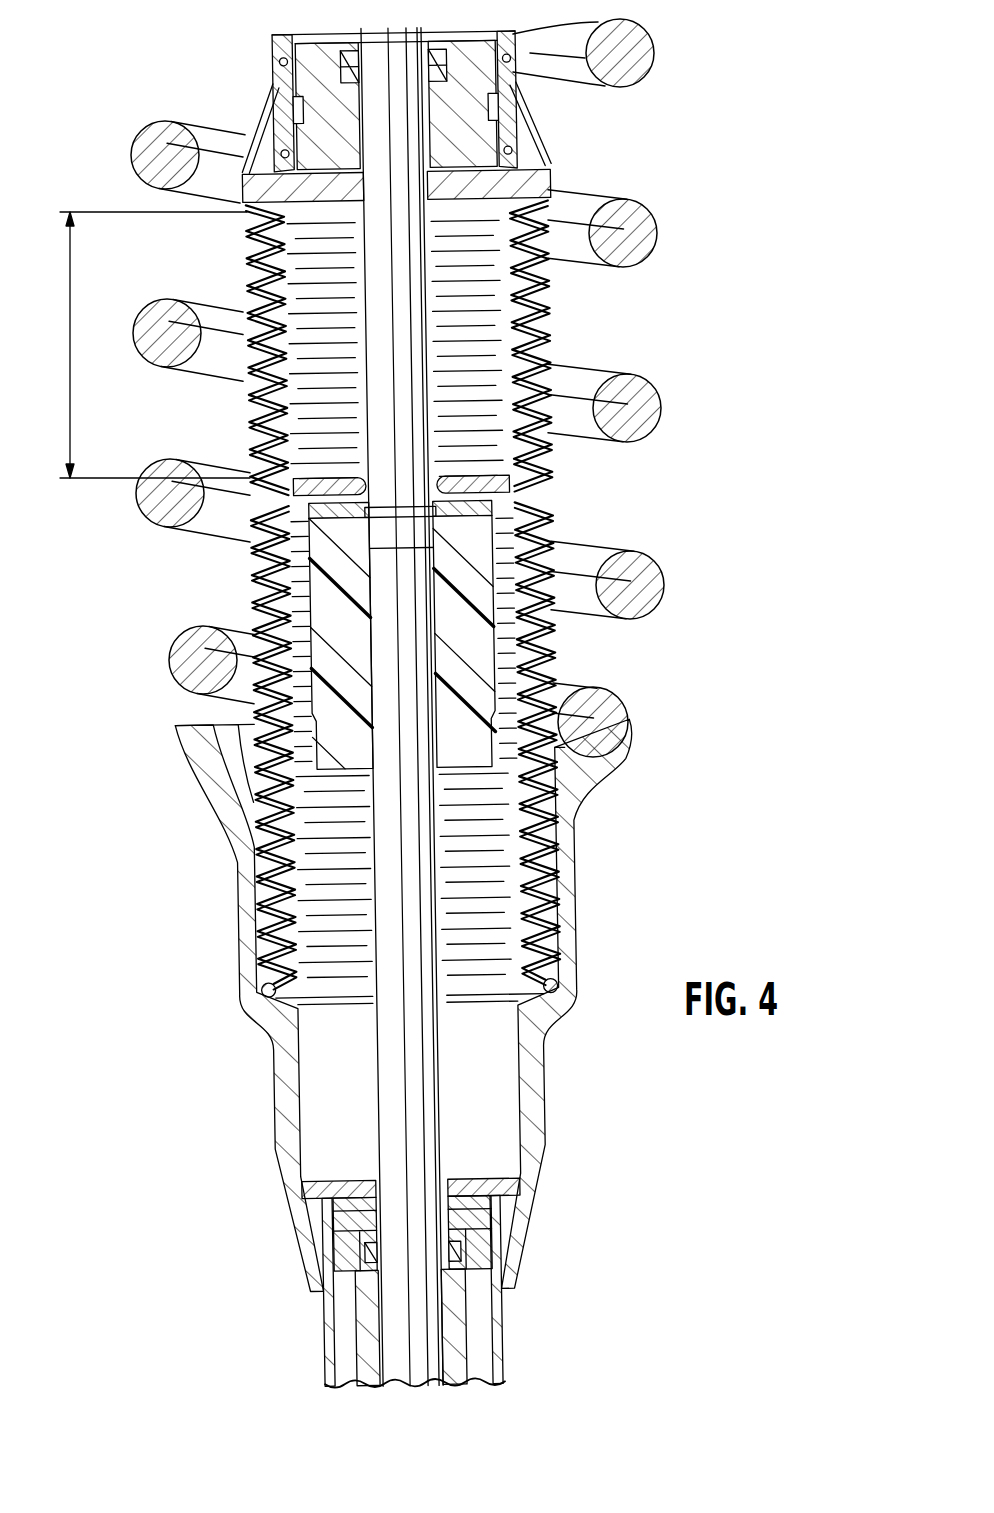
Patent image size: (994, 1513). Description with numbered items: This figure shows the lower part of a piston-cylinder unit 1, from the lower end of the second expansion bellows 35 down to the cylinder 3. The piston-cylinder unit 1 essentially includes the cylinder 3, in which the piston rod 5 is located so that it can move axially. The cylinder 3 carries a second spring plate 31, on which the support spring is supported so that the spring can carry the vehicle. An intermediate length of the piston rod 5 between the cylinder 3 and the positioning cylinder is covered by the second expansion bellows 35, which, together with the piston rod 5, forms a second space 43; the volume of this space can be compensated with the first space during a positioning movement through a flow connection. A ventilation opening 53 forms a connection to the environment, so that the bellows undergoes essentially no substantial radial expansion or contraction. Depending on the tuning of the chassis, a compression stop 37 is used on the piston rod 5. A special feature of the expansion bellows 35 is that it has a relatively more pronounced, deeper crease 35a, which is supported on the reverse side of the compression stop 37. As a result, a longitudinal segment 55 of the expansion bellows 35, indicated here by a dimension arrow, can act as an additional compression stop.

The piston-cylinder unit 1 is at (165, 803).
The cylinder 3 is at (507, 1320).
The piston rod 5 is at (407, 880).
The second spring plate 31 is at (533, 1136).
The second expansion bellows 35 is at (520, 343).
The crease 35a is at (292, 460).
The compression stop 37 is at (467, 677).
The second space 43 is at (477, 306).
The ventilation opening 53 is at (520, 1183).
The longitudinal segment 55 is at (70, 351).